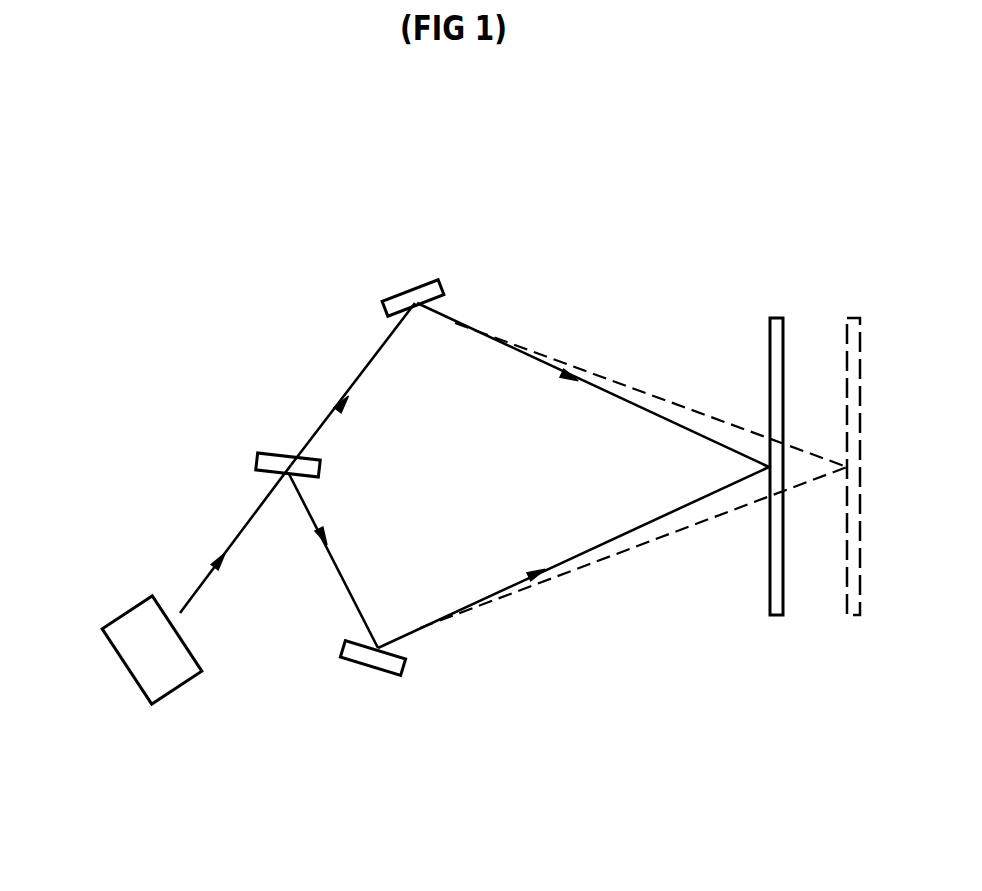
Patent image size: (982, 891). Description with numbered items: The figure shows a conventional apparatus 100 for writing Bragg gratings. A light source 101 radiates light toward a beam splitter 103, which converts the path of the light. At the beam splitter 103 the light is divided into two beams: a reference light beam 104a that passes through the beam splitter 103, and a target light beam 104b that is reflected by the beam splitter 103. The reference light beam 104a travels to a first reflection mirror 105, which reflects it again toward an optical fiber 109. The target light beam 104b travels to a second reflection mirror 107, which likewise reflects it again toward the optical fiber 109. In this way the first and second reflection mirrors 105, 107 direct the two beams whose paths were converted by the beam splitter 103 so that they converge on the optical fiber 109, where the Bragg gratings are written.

The apparatus for writing Bragg gratings 100 is at (594, 242).
The light source 101 is at (137, 642).
The beam splitter 103 is at (270, 452).
The reference light beam 104a is at (353, 387).
The target light beam 104b is at (563, 563).
The first reflection mirror 105 is at (393, 295).
The second reflection mirror 107 is at (402, 665).
The optical fiber 109 is at (770, 326).